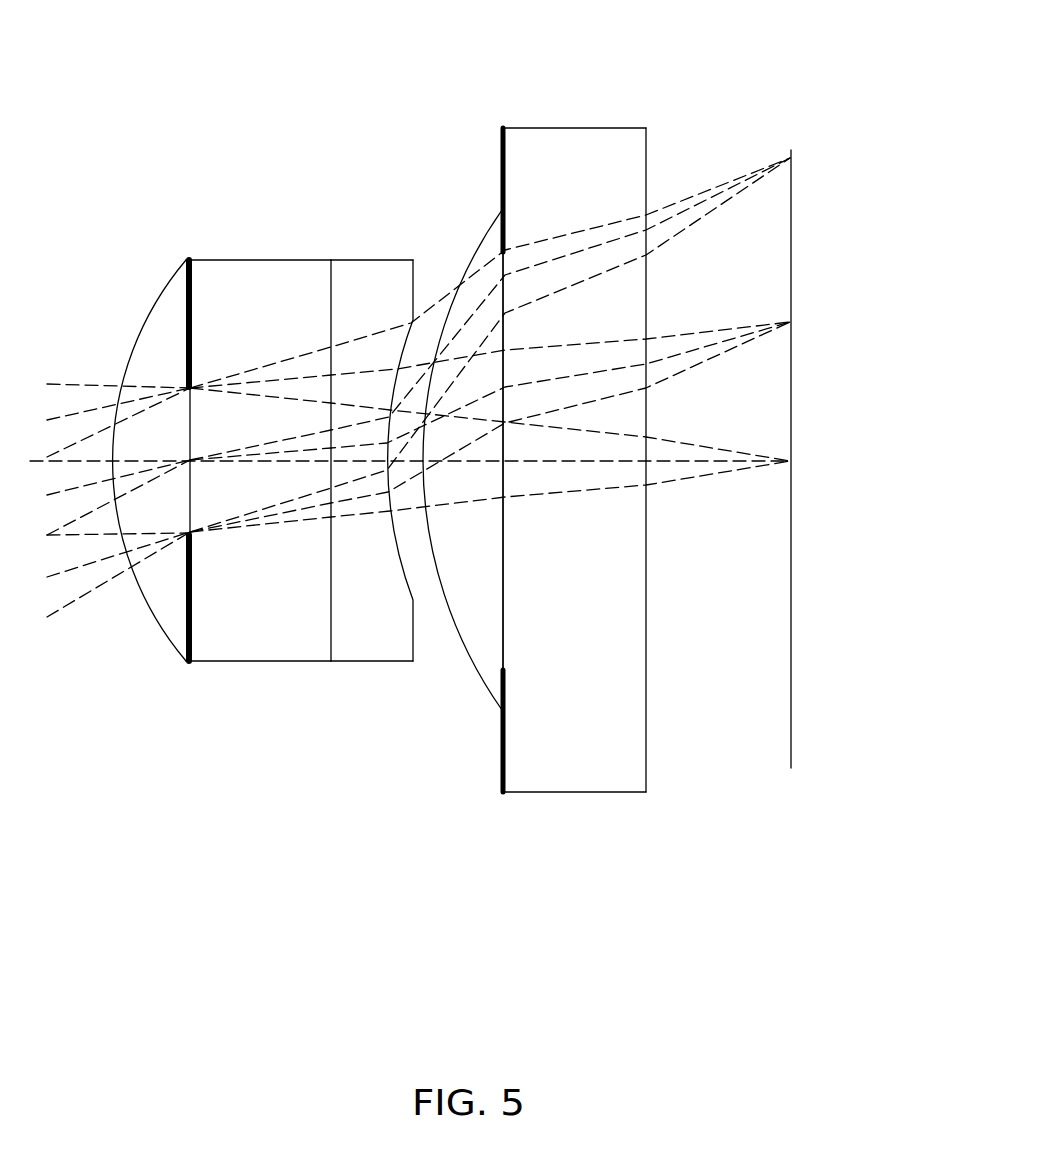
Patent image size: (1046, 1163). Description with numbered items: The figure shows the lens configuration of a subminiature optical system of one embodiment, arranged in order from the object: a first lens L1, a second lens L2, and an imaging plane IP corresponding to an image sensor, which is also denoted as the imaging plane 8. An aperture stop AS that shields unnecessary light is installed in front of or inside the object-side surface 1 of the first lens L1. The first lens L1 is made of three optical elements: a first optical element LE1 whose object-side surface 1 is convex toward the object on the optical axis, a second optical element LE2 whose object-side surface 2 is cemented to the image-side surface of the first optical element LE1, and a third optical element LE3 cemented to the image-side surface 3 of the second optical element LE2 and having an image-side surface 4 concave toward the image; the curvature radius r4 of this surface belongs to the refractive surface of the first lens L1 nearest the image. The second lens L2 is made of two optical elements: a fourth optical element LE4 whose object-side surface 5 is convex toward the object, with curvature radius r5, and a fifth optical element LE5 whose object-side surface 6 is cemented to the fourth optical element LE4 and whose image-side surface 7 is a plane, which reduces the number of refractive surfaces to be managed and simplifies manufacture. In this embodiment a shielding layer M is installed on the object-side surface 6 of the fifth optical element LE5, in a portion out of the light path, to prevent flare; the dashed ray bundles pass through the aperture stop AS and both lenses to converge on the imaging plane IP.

The object-side surface of the first lens 1 is at (152, 313).
The object-side surface of the second optical element 2 is at (184, 289).
The image-side surface of the second optical element 3 is at (330, 297).
The image-side surface of the third optical element 4 is at (413, 283).
The object-side surface of the fourth optical element 5 is at (484, 236).
The object-side surface of the fifth optical element 6 is at (499, 157).
The image-side surface of the fifth optical element 7 is at (645, 155).
The imaging plane 8 is at (832, 540).
The aperture stop AS is at (187, 598).
The first optical element LE1 is at (111, 459).
The second optical element LE2 is at (260, 461).
The third optical element LE3 is at (372, 474).
The fourth optical element LE4 is at (440, 540).
The fifth optical element LE5 is at (583, 480).
The first lens L1 is at (223, 504).
The second lens L2 is at (553, 523).
The shielding layer M is at (574, 406).
The imaging plane IP is at (792, 750).